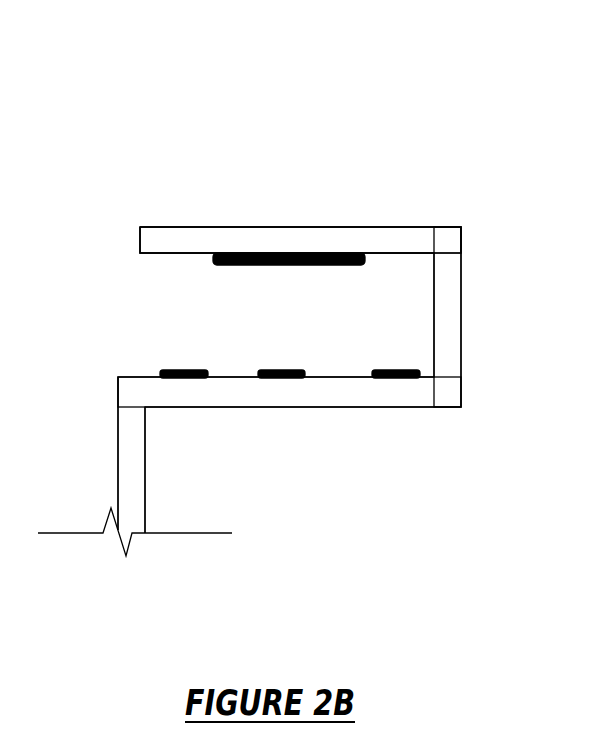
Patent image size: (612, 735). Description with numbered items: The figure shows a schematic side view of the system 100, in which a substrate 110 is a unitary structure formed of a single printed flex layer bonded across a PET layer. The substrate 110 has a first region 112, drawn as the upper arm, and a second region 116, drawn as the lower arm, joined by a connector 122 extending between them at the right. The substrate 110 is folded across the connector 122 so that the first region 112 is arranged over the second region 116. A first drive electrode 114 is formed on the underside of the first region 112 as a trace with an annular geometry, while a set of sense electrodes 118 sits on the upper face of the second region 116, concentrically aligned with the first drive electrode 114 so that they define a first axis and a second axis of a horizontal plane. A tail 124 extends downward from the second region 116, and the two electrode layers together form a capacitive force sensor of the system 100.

The system 100 is at (192, 103).
The substrate 110 is at (146, 243).
The first region 112 is at (294, 240).
The first drive electrode 114 is at (340, 258).
The second region 116 is at (238, 400).
The set of sense electrodes 118 is at (285, 380).
The connector 122 is at (444, 363).
The tail 124 is at (116, 454).